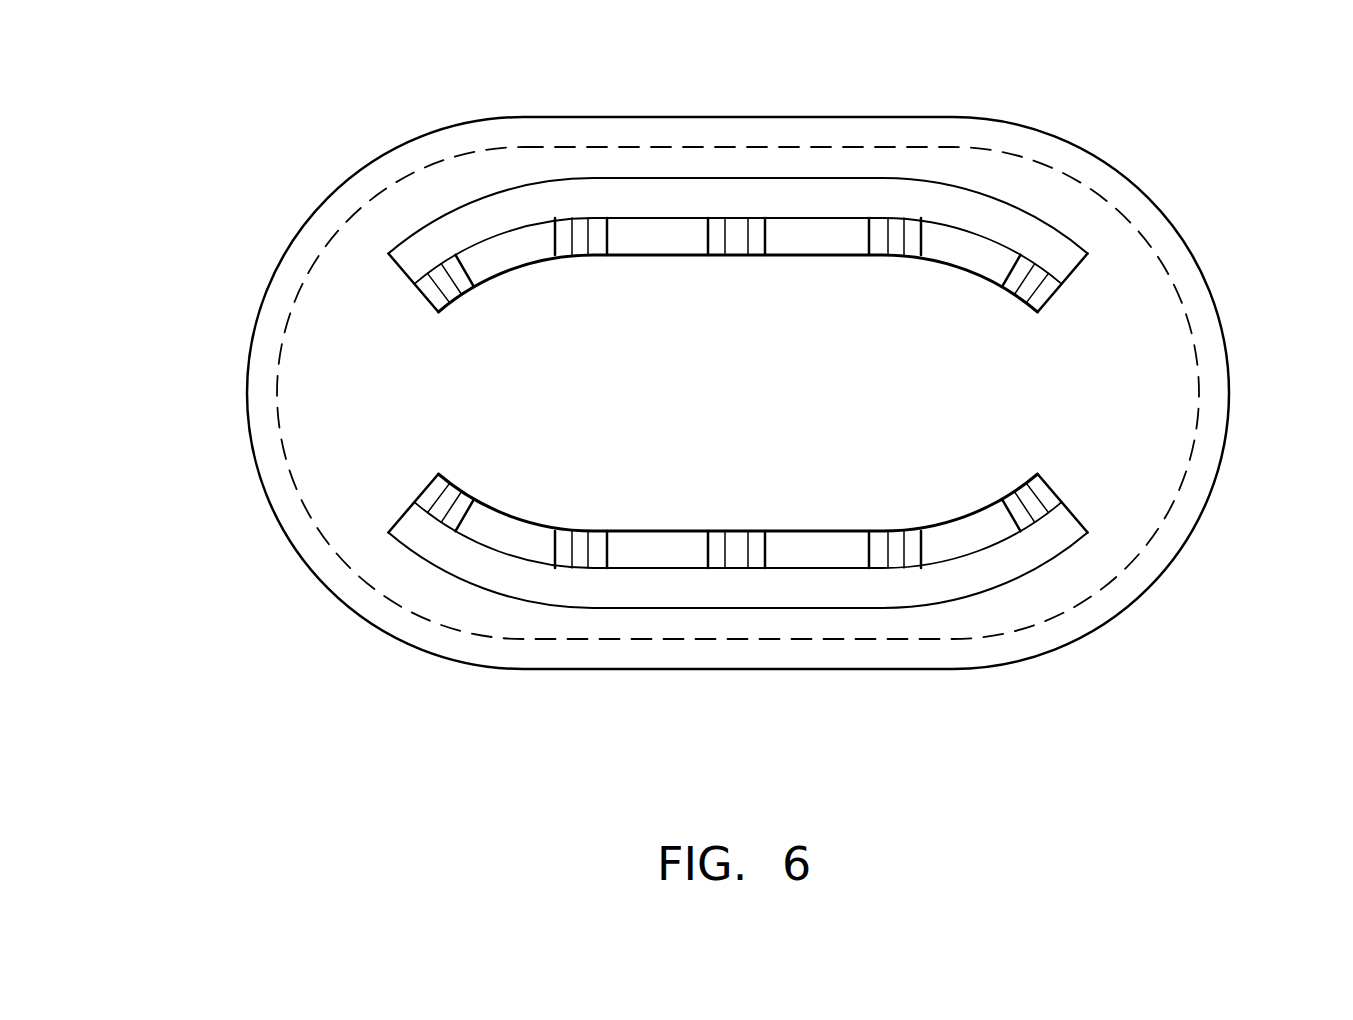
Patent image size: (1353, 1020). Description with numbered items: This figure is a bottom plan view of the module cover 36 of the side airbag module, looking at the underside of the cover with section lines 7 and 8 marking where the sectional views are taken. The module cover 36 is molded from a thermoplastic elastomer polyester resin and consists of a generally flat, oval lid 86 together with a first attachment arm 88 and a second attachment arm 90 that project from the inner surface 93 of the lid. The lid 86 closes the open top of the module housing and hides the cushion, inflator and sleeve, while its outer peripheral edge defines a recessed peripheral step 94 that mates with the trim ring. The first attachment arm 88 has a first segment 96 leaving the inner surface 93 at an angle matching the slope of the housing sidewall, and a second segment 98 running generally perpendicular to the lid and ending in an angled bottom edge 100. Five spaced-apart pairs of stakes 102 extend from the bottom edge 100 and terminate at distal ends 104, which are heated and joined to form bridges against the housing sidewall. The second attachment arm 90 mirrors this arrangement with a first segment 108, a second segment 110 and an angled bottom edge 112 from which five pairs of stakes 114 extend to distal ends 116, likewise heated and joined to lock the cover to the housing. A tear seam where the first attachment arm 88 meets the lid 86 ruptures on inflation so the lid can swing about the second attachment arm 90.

The section line 7- 7 is at (162, 360).
The section line 8- 8 is at (775, 49).
The module cover 36 is at (765, 393).
The lid 86 is at (1122, 173).
The first attachment arm 88 is at (754, 264).
The second attachment arm 90 is at (767, 528).
The inner surface 93 is at (1185, 380).
The peripheral step 94 is at (780, 393).
The first segment 96 is at (1045, 232).
The second segment 98 is at (982, 277).
The bottom edge 100 is at (953, 253).
The stakes 102 is at (432, 296).
The distal ends 104 is at (430, 296).
The first segment 108 is at (832, 603).
The second segment 110 is at (960, 517).
The bottom edge 112 is at (975, 520).
The stakes 114 is at (435, 472).
The distal ends 116 is at (437, 512).